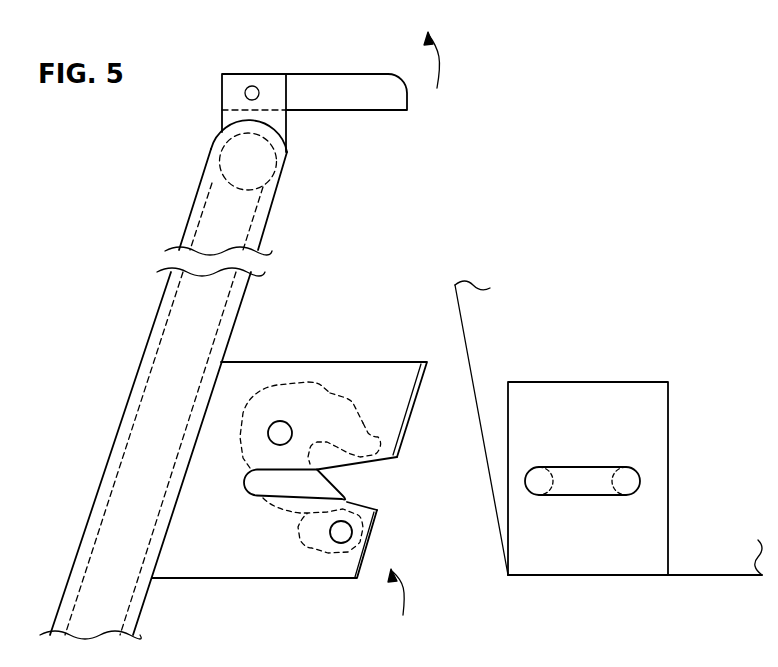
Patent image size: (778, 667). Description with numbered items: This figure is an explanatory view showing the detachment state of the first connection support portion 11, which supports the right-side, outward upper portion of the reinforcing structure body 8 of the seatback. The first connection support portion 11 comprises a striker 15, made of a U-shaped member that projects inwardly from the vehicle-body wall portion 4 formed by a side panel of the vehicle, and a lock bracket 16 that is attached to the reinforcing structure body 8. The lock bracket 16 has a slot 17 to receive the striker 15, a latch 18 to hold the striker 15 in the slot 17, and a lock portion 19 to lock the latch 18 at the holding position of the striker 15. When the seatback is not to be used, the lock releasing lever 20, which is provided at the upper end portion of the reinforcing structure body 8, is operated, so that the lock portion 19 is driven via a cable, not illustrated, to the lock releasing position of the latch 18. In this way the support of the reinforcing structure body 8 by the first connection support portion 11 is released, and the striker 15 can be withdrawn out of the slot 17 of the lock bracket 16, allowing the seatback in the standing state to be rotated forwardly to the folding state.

The vehicle-body wall portion 4 is at (715, 563).
The reinforcing structure body 8 is at (115, 423).
The first connection support portion 11 is at (289, 504).
The striker 15 is at (583, 467).
The lock bracket 16 is at (267, 378).
The slot 17 is at (362, 481).
The latch 18 is at (334, 392).
The lock portion 19 is at (312, 545).
The lock releasing lever 20 is at (363, 80).